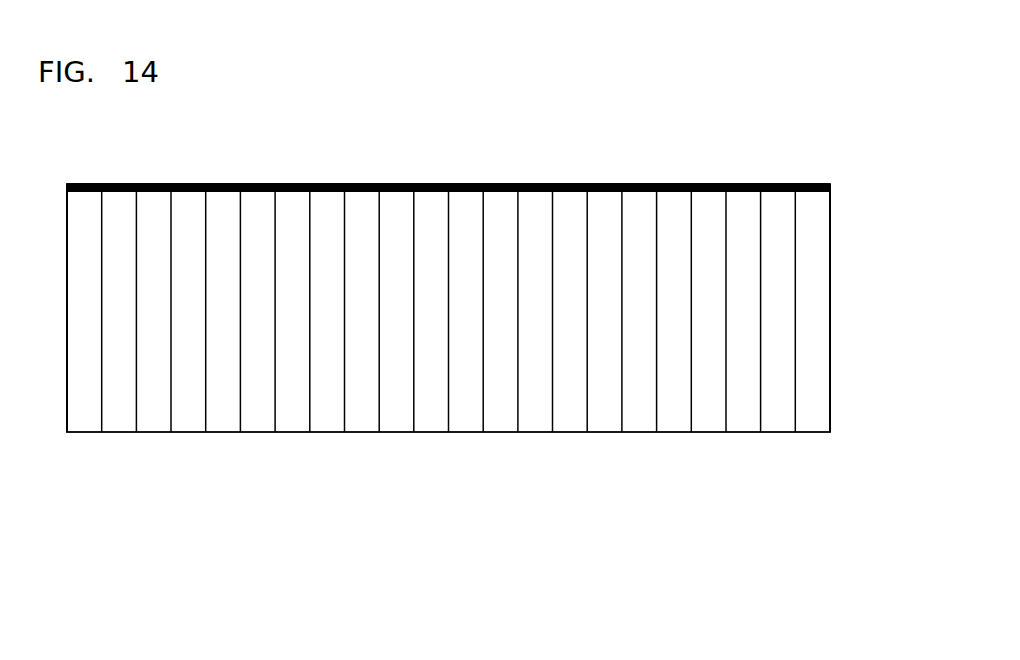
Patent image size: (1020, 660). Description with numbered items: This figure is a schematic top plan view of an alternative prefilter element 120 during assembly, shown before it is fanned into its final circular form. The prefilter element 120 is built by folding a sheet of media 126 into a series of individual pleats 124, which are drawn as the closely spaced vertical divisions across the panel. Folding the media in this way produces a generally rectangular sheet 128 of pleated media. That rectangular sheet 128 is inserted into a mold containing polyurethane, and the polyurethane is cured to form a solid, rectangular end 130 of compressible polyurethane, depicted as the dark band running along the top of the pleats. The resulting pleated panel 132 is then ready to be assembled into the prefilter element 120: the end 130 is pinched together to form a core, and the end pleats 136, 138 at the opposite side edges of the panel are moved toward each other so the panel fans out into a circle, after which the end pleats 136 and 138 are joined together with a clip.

The prefilter element 120 is at (522, 128).
The pleats 124 is at (276, 412).
The sheet of media 126 is at (154, 420).
The rectangular sheet 128 is at (68, 282).
The rectangular end 130 is at (708, 187).
The panel 132 is at (300, 154).
The end pleat 136 is at (68, 333).
The end pleat 138 is at (830, 340).